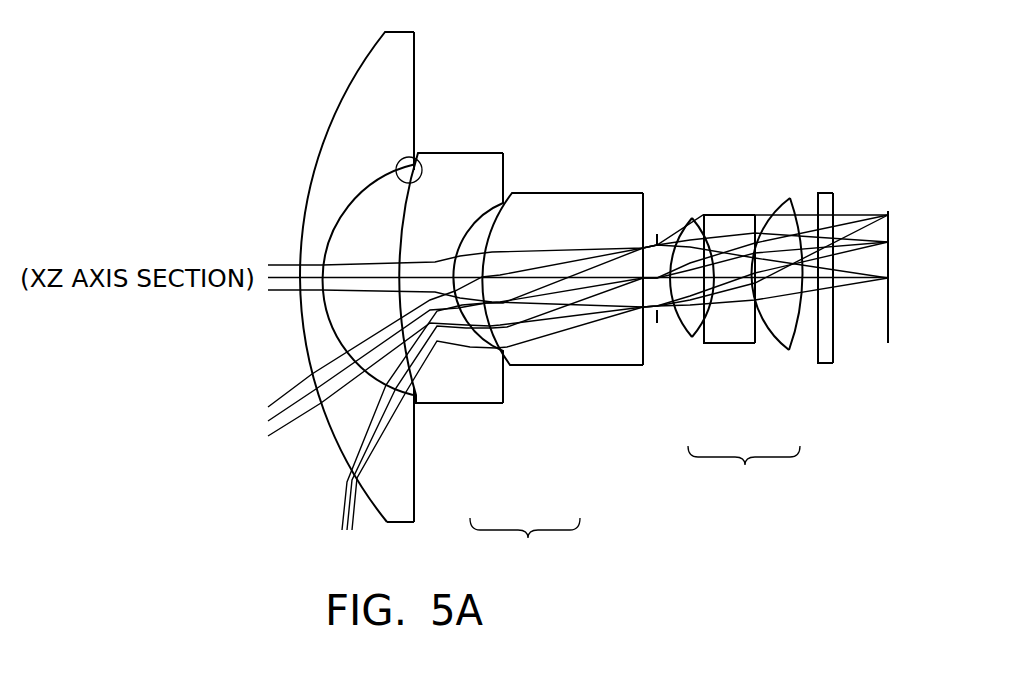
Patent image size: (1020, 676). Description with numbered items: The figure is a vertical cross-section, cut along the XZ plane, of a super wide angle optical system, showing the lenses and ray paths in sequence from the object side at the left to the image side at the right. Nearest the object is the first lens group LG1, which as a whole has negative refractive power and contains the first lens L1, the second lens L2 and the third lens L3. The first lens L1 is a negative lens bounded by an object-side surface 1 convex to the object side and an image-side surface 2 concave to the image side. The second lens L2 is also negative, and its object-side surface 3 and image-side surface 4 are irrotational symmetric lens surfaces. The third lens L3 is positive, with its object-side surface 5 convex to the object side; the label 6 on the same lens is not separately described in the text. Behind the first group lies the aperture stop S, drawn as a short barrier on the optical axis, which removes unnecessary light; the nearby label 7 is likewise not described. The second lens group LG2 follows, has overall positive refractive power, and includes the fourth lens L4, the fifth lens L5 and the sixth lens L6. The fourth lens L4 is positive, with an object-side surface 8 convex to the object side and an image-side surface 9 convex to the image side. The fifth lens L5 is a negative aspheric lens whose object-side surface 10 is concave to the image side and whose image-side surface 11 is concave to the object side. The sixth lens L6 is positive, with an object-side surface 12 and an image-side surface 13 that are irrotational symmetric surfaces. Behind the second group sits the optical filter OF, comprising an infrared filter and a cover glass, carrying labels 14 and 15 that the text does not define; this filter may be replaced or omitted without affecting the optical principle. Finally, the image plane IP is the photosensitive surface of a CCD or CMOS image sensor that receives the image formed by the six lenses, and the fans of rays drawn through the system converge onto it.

The object-side surface 1 is at (357, 78).
The image-side surface 2 is at (417, 64).
The object-side surface 3 is at (415, 152).
The image-side surface 4 is at (504, 172).
The object-side surface 5 is at (512, 193).
The image-side surface of third lens L3 6 is at (643, 207).
The aperture stop S 7 is at (657, 236).
The object-side surface 8 is at (684, 228).
The image-side surface 9 is at (708, 222).
The object-side surface 10 is at (716, 233).
The image-side surface 11 is at (757, 213).
The object-side surface 12 is at (789, 199).
The image-side surface 13 is at (803, 215).
The object-side surface of optical filter OF 14 is at (818, 200).
The image-side surface of optical filter OF 15 is at (834, 206).
The first lens L1 is at (390, 268).
The second lens L2 is at (468, 288).
The third lens L3 is at (565, 296).
The fourth lens L4 is at (707, 282).
The fifth lens L5 is at (743, 277).
The sixth lens L6 is at (799, 277).
The aperture stop S is at (657, 263).
The optical filter OF is at (861, 276).
The image plane IP is at (888, 325).
The first lens group LG1 is at (525, 544).
The second lens group LG2 is at (744, 471).